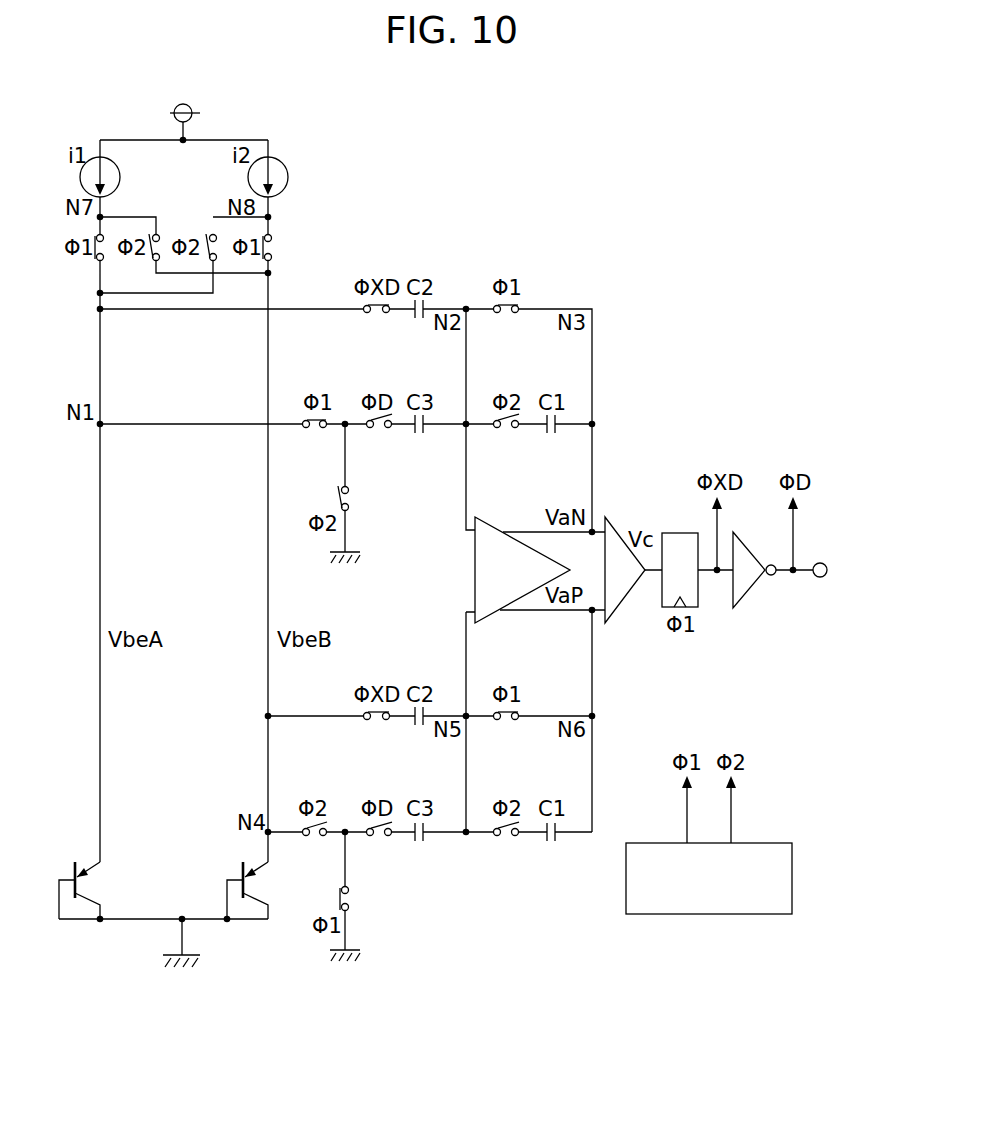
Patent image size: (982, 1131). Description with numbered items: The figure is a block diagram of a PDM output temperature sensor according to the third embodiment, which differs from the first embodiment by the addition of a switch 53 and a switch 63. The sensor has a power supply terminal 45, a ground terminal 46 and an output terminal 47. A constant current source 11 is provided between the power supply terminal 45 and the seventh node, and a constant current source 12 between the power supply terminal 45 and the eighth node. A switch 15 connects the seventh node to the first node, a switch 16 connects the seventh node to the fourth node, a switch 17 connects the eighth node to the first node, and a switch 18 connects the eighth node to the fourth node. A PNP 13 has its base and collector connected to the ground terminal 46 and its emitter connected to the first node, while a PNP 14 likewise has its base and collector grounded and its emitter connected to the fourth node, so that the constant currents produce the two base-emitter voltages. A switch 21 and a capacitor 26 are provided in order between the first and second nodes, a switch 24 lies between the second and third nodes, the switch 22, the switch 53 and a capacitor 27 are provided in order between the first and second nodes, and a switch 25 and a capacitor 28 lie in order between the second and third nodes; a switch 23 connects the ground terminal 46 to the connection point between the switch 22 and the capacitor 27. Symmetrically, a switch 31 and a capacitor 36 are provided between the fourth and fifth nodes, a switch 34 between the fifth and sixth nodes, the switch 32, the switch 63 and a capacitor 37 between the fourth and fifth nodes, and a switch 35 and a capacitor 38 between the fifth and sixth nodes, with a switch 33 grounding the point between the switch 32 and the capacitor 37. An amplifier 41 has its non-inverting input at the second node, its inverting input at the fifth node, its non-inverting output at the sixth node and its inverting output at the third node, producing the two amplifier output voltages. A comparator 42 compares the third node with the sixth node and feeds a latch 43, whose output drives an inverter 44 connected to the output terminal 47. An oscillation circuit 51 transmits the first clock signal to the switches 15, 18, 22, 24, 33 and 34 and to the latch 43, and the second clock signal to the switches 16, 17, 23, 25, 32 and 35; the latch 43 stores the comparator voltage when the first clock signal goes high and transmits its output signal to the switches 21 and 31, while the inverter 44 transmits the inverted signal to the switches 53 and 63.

The constant current source 11 is at (121, 177).
The constant current source 12 is at (289, 177).
The PNP bipolar transistor 13 is at (81, 897).
The PNP bipolar transistor 14 is at (248, 897).
The switch 15 is at (112, 252).
The switch 16 is at (168, 252).
The switch 17 is at (225, 252).
The switch 18 is at (282, 252).
The switch 21 is at (378, 314).
The switch 22 is at (315, 428).
The switch 23 is at (352, 500).
The switch 24 is at (507, 314).
The switch 25 is at (507, 428).
The capacitor 26 is at (419, 320).
The capacitor 27 is at (419, 435).
The capacitor 28 is at (551, 435).
The switch 31 is at (378, 721).
The switch 32 is at (315, 836).
The switch 33 is at (352, 905).
The switch 34 is at (507, 721).
The switch 35 is at (507, 836).
The capacitor 36 is at (419, 727).
The capacitor 37 is at (419, 843).
The capacitor 38 is at (551, 843).
The amplifier 41 is at (487, 622).
The comparator 42 is at (615, 620).
The latch 43 is at (699, 598).
The inverter 44 is at (750, 592).
The power supply terminal 45 is at (172, 112).
The ground terminal 46 is at (165, 957).
The output terminal 47 is at (820, 578).
The oscillation circuit 51 is at (793, 880).
The switch 53 is at (379, 428).
The switch 63 is at (379, 836).